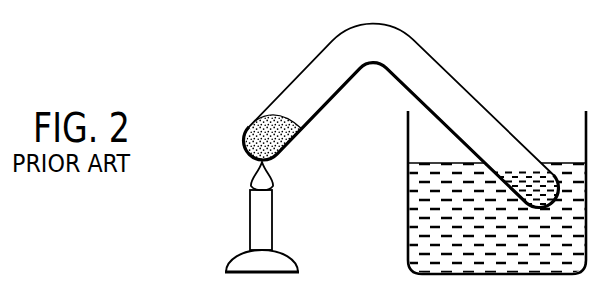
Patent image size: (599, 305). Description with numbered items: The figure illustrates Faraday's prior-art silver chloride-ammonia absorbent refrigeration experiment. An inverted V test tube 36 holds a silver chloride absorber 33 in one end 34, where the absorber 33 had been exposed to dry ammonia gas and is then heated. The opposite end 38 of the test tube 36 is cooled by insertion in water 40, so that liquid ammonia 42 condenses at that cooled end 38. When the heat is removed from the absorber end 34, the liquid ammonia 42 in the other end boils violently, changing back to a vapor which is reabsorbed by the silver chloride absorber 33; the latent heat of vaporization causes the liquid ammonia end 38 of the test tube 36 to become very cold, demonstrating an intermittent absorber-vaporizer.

The absorber 33 is at (245, 136).
The one end 34 is at (246, 167).
The inverted V test tube 36 is at (311, 62).
The opposite end 38 is at (525, 203).
The water 40 is at (416, 231).
The liquid ammonia 42 is at (529, 178).